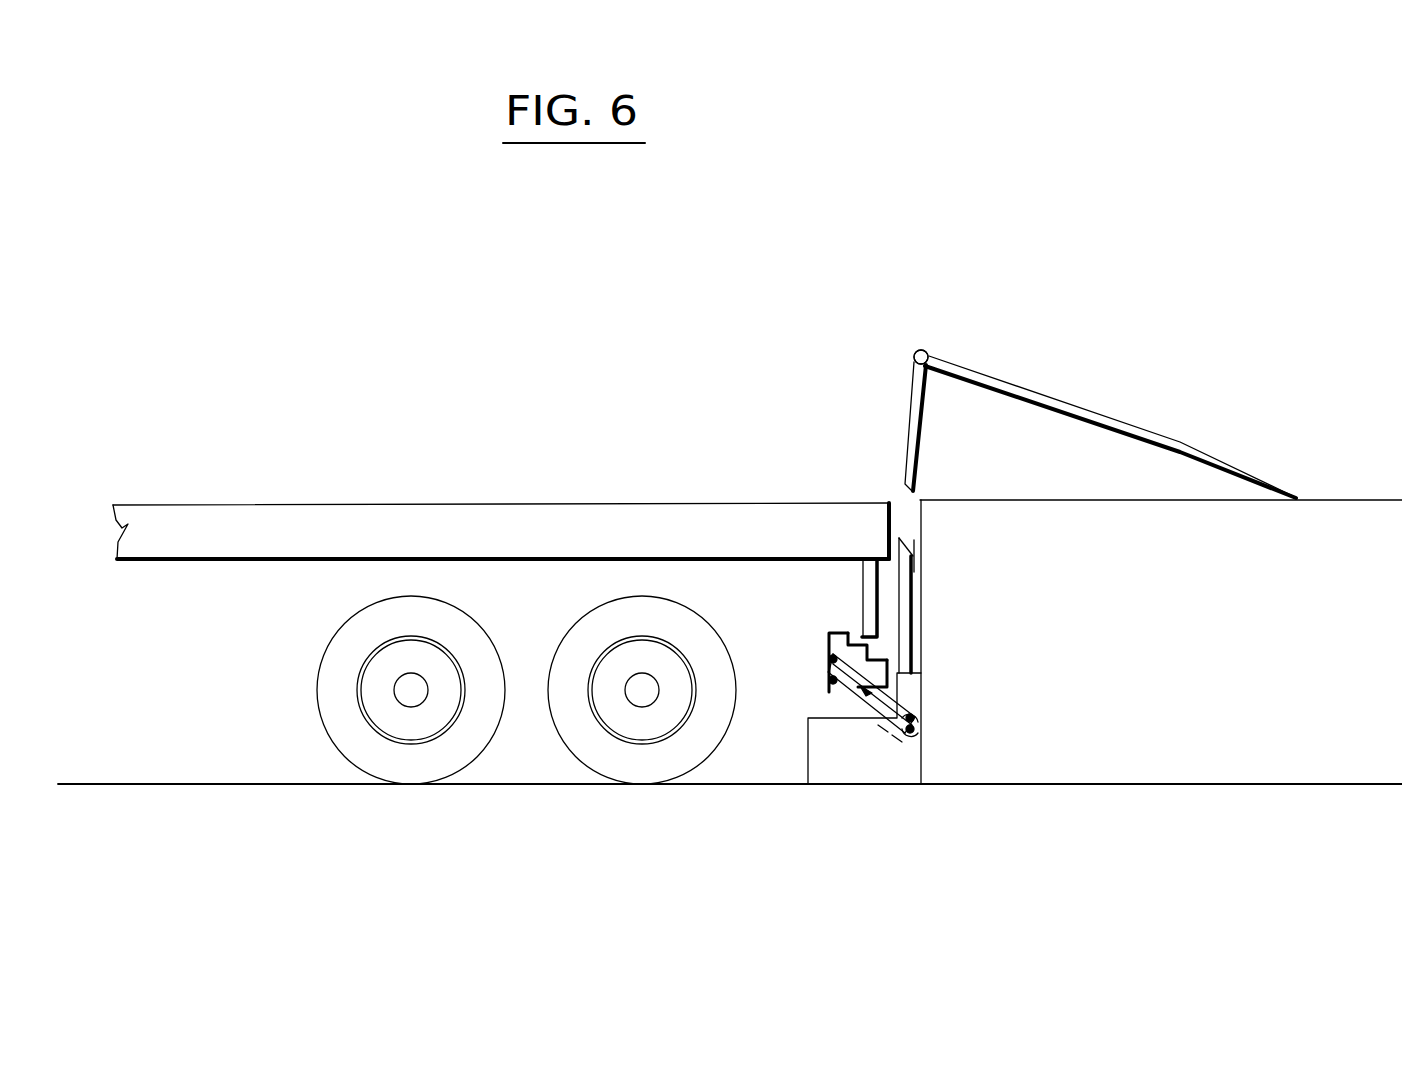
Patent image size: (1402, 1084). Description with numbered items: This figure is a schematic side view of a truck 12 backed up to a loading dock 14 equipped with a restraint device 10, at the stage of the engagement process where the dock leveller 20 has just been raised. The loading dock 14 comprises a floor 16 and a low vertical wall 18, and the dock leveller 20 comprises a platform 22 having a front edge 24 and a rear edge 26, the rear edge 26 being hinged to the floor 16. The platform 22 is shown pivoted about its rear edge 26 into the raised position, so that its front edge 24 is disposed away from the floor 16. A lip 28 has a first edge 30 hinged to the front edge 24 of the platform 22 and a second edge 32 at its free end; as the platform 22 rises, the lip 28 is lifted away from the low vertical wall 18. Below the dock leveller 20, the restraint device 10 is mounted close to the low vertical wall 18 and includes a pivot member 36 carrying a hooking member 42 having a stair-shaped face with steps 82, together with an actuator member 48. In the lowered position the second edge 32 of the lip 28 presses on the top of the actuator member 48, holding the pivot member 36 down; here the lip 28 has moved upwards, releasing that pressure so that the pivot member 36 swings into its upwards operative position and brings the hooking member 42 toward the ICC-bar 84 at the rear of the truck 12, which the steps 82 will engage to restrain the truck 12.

The restraint device 10 is at (800, 744).
The vehicle 12 is at (519, 422).
The loading dock 14 is at (1161, 592).
The floor 16 is at (1345, 499).
The low vertical wall 18 is at (922, 645).
The dock leveller 20 is at (1089, 352).
The platform 22 is at (1124, 407).
The front edge 24 is at (930, 358).
The rear edge 26 is at (1299, 497).
The lip 28 is at (973, 416).
The first edge 30 is at (914, 357).
The second edge 32 is at (914, 490).
The pivot member 36 is at (846, 702).
The hooking member 42 is at (834, 643).
The actuator member 48 is at (905, 604).
The step 82 is at (857, 645).
The ICC-bar 84 is at (866, 563).